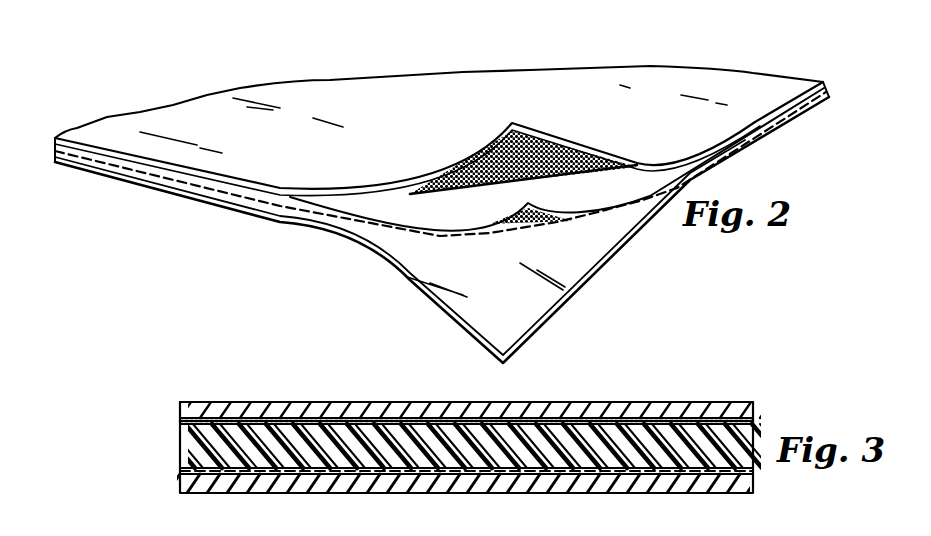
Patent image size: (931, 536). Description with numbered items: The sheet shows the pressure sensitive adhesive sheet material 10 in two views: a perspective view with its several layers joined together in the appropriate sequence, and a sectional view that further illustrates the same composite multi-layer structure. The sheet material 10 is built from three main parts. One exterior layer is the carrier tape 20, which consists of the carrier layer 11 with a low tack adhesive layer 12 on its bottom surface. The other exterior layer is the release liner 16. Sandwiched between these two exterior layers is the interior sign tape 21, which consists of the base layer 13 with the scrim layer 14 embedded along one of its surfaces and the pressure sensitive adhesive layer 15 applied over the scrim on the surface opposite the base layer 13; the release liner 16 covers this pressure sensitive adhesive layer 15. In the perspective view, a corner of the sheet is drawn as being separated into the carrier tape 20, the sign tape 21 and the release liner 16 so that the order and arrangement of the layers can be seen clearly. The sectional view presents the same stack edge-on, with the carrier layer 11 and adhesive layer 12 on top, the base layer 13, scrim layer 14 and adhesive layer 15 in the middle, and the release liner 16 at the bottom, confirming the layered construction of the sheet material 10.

In FIG. 2, the pressure sensitive adhesive sheet material 10 is at (809, 68).
In FIG. 3, the pressure sensitive adhesive sheet material 10 is at (633, 391).
In FIG. 2, the carrier layer 11 is at (642, 104).
In FIG. 3, the carrier layer 11 is at (731, 407).
In FIG. 2, the adhesive layer 12 is at (545, 157).
In FIG. 3, the adhesive layer 12 is at (757, 421).
In FIG. 2, the base layer 13 is at (563, 197).
In FIG. 3, the base layer 13 is at (408, 438).
In FIG. 2, the scrim layer 14 is at (607, 218).
In FIG. 3, the scrim layer 14 is at (568, 475).
In FIG. 2, the pressure sensitive adhesive layer 15 is at (528, 216).
In FIG. 3, the pressure sensitive adhesive layer 15 is at (678, 481).
In FIG. 2, the release liner 16 is at (418, 292).
In FIG. 3, the release liner 16 is at (180, 484).
In FIG. 2, the carrier tape 20 is at (492, 142).
In FIG. 3, the carrier tape 20 is at (176, 419).
In FIG. 2, the sign tape 21 is at (458, 228).
In FIG. 3, the sign tape 21 is at (176, 424).